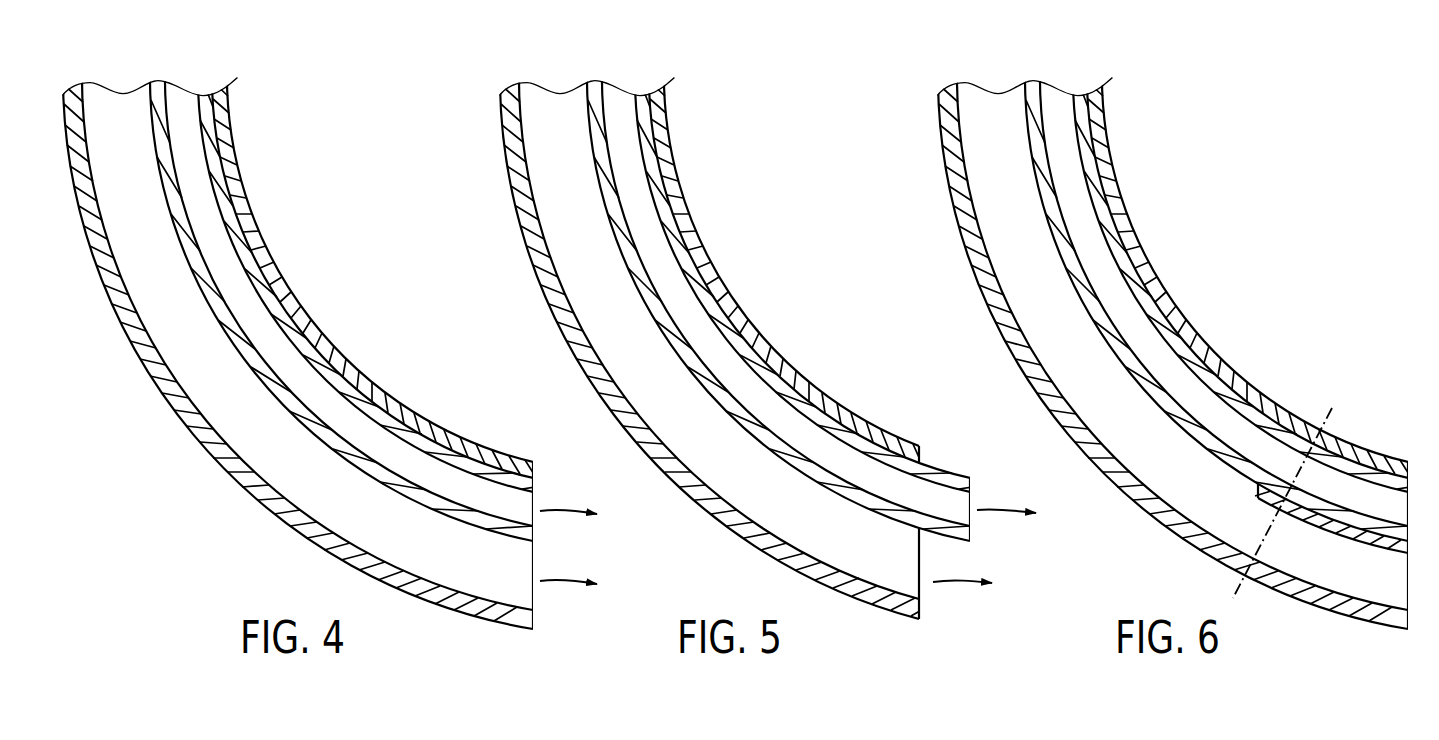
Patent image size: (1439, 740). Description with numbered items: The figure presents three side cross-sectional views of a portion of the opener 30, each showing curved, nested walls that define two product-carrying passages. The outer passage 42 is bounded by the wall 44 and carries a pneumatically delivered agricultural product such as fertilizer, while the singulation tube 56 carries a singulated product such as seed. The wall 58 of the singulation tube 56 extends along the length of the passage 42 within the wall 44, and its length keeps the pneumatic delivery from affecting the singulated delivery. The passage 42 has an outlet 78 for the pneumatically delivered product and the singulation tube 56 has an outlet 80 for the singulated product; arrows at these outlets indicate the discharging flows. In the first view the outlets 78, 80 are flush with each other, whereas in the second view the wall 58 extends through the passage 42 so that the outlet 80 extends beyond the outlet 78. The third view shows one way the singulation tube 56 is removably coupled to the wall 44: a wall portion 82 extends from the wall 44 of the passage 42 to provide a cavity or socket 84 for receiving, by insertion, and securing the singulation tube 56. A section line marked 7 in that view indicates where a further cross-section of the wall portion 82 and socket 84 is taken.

In FIG. 4, the opener 30 is at (272, 127).
In FIG. 5, the opener 30 is at (709, 127).
In FIG. 6, the opener 30 is at (1147, 127).
In FIG. 4, the passage 42 is at (119, 114).
In FIG. 5, the passage 42 is at (556, 114).
In FIG. 6, the passage 42 is at (994, 114).
In FIG. 4, the wall 44 is at (110, 268).
In FIG. 5, the wall 44 is at (547, 268).
In FIG. 6, the wall 44 is at (985, 268).
In FIG. 4, the singulation tube 56 is at (192, 108).
In FIG. 5, the singulation tube 56 is at (629, 108).
In FIG. 6, the singulation tube 56 is at (1067, 108).
In FIG. 4, the wall of the singulation tube 58 is at (258, 278).
In FIG. 5, the wall of the singulation tube 58 is at (695, 278).
In FIG. 6, the wall of the singulation tube 58 is at (1133, 278).
In FIG. 4, the outlet 78 is at (544, 600).
In FIG. 5, the outlet 78 is at (931, 590).
In FIG. 4, the outlet 80 is at (544, 498).
In FIG. 5, the outlet 80 is at (982, 499).
In FIG. 6, the wall portion 82 is at (1343, 535).
In FIG. 6, the cavity or socket 84 is at (1250, 490).
In FIG. 6, the section line 7- 7 is at (1332, 408).